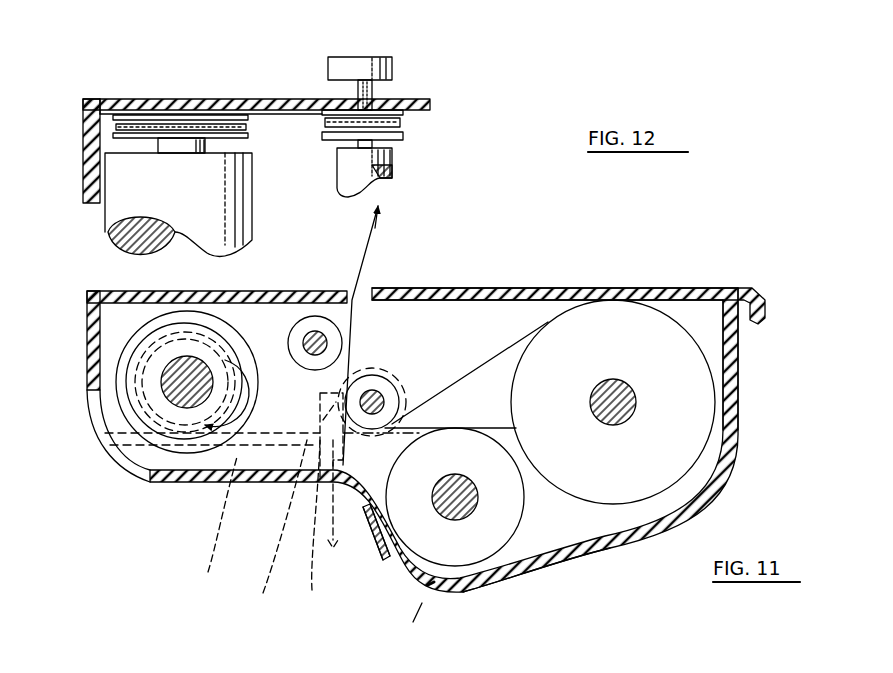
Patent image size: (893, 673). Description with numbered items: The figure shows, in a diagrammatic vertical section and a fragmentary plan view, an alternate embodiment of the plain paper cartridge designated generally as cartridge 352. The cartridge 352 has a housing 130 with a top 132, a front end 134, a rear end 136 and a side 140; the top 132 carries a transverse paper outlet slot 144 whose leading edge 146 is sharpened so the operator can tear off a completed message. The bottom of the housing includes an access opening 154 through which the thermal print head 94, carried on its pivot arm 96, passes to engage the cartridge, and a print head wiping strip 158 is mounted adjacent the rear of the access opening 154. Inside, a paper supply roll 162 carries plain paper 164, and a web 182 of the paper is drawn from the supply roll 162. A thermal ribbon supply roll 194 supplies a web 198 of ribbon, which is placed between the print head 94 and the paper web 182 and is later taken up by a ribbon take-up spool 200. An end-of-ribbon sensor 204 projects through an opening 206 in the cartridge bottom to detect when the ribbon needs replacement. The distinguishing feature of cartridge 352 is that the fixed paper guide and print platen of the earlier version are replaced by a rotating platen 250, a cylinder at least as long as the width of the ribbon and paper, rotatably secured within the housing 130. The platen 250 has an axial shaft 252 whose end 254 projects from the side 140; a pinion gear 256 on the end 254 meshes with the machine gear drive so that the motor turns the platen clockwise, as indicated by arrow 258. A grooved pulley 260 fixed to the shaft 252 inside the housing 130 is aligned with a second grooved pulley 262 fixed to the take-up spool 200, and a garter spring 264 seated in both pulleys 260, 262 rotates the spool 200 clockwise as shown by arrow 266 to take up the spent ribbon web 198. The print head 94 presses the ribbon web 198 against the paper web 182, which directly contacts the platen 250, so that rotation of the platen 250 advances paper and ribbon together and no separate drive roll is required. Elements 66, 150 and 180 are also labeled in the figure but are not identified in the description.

In FIG. 11, the lower curved housing wall 66 is at (98, 412).
In FIG. 11, the thermal print head 94 is at (272, 523).
In FIG. 11, the pivot arm 96 is at (304, 523).
In FIG. 12, the housing 130 is at (83, 132).
In FIG. 11, the housing 130 is at (728, 290).
In FIG. 11, the top 132 is at (645, 290).
In FIG. 11, the front end 134 is at (87, 357).
In FIG. 11, the rear end 136 is at (738, 388).
In FIG. 12, the side 140 is at (283, 99).
In FIG. 11, the paper outlet slot 144 is at (382, 292).
In FIG. 11, the leading edge 146 is at (370, 232).
In FIG. 11, the retaining flange 150 is at (762, 310).
In FIG. 11, the access opening 154 is at (292, 490).
In FIG. 11, the print head wiping strip 158 is at (375, 551).
In FIG. 11, the paper supply roll 162 is at (641, 419).
In FIG. 11, the plain paper 164 is at (663, 336).
In FIG. 11, the bottom wall 180 is at (585, 553).
In FIG. 11, the paper web 182 is at (492, 357).
In FIG. 11, the thermal ribbon supply roll 194 is at (470, 553).
In FIG. 11, the ribbon web 198 is at (252, 346).
In FIG. 12, the ribbon take-up spool 200 is at (157, 202).
In FIG. 11, the ribbon take-up spool 200 is at (278, 347).
In FIG. 11, the end-of-ribbon sensor 204 is at (415, 580).
In FIG. 11, the opening 206 is at (425, 577).
In FIG. 12, the rotating platen 250 is at (396, 158).
In FIG. 11, the rotating platen 250 is at (385, 393).
In FIG. 12, the axial shaft 252 is at (404, 136).
In FIG. 11, the axial shaft 252 is at (386, 402).
In FIG. 12, the shaft end 254 is at (373, 84).
In FIG. 12, the pinion gear 256 is at (396, 65).
In FIG. 11, the arrow 258 is at (348, 392).
In FIG. 12, the grooved pulley 260 is at (404, 114).
In FIG. 12, the second grooved pulley 262 is at (115, 99).
In FIG. 11, the second grooved pulley 262 is at (153, 331).
In FIG. 12, the garter spring 264 is at (145, 127).
In FIG. 11, the garter spring 264 is at (241, 523).
In FIG. 11, the arrow 266 is at (197, 413).
In FIG. 12, the plain paper cartridge 352 is at (215, 88).
In FIG. 11, the plain paper cartridge 352 is at (588, 266).